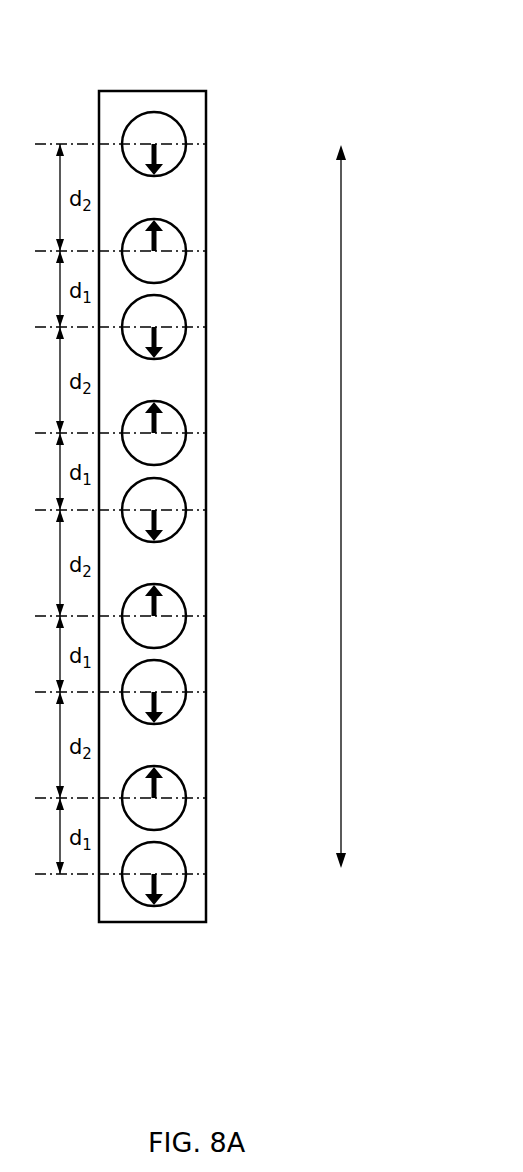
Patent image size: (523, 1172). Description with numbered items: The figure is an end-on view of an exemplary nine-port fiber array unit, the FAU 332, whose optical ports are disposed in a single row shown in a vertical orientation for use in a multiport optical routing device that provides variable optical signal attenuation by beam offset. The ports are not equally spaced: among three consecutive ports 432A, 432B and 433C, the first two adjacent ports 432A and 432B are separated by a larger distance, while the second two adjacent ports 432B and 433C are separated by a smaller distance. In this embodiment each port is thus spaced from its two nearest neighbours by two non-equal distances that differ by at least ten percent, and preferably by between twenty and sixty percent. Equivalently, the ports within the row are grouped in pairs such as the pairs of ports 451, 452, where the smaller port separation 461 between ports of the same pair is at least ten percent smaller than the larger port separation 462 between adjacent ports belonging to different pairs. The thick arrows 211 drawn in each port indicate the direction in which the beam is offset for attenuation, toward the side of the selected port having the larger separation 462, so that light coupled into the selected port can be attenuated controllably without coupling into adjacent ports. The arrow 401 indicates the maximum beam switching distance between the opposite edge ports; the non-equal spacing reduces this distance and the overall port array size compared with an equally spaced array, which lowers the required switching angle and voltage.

The fiber array unit 332 is at (153, 91).
The thick arrows 211 is at (158, 165).
The first optical port 432A is at (187, 332).
The second optical port 432B is at (187, 438).
The third optical port 433C is at (187, 517).
The pair of ports 451 is at (225, 600).
The pair of ports 452 is at (225, 787).
The port separation d1 461 is at (128, 840).
The port separation d2 462 is at (172, 742).
The maximum beam switching distance 401 is at (341, 504).